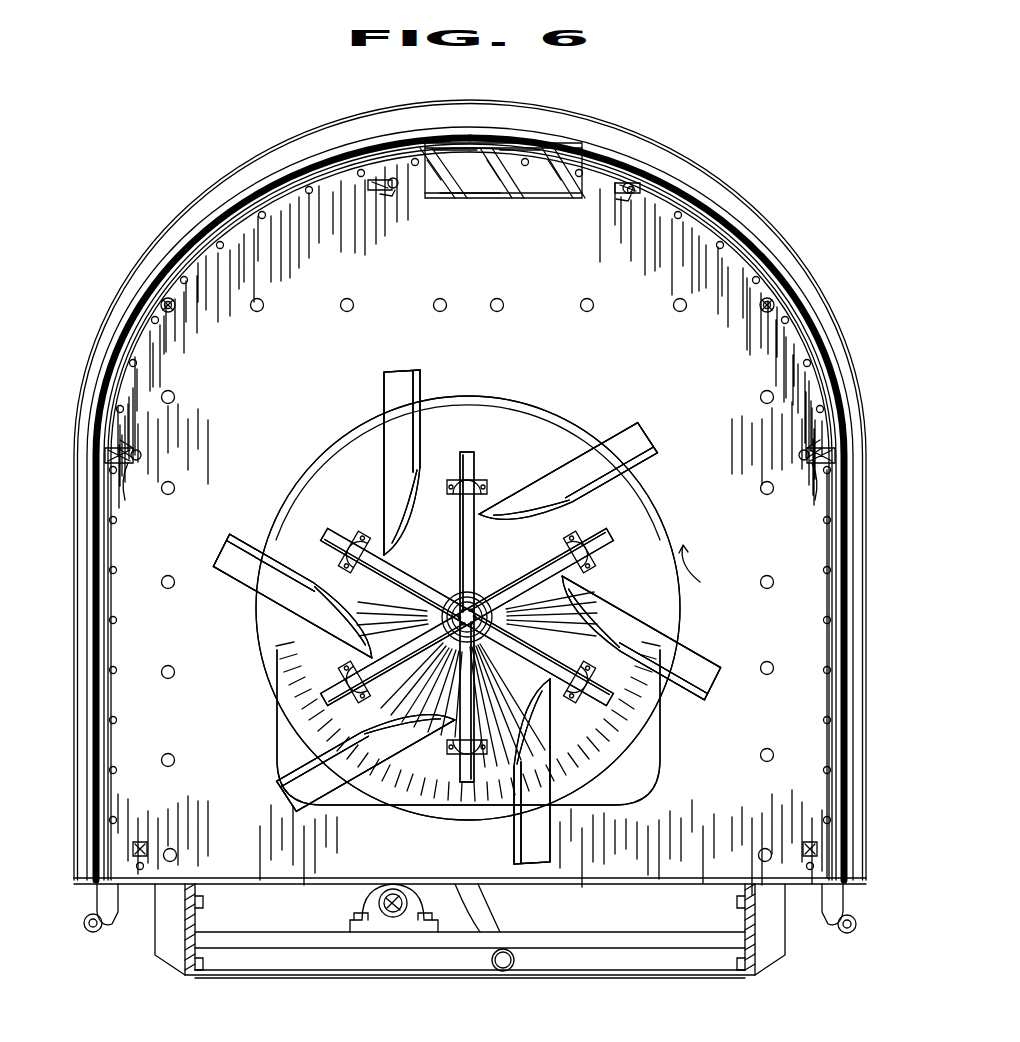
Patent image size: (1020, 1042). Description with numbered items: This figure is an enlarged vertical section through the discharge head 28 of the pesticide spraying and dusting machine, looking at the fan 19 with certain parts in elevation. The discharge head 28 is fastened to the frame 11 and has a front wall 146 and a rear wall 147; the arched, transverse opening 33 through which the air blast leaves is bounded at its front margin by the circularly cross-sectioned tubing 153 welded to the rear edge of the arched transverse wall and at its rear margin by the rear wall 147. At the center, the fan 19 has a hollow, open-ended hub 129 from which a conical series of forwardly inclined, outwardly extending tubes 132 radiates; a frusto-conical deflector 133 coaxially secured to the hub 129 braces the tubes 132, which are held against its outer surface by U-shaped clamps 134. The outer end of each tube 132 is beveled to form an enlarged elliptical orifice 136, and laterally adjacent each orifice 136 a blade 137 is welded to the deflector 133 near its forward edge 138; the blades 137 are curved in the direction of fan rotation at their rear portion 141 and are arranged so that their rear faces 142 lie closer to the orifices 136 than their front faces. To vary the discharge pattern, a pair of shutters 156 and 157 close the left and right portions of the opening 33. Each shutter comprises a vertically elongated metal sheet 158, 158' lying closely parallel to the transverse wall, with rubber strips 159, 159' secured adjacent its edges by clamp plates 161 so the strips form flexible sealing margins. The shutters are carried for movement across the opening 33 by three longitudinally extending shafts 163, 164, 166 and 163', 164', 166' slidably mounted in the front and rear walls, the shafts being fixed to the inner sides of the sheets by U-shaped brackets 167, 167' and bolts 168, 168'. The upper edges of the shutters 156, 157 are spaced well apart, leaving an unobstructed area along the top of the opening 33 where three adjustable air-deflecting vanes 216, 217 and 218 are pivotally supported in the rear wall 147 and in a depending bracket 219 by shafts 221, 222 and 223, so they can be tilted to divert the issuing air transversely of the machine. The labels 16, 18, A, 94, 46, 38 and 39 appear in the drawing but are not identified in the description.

The housing dome 16 is at (598, 131).
The arched transverse opening 33 is at (200, 203).
The discharge head 28 is at (735, 205).
The tubing 153 is at (758, 253).
The metal sheet 158 is at (470, 514).
The metal sheet 158' is at (649, 516).
The shutter 156 is at (124, 645).
The shutter 157 is at (829, 573).
The clamp plates 161 is at (140, 330).
The rubber strips 159 is at (305, 256).
The rubber strips 159' is at (776, 348).
The shaft 164 is at (146, 436).
The shaft 164' is at (791, 446).
The bolts 168 is at (250, 519).
The bolts 168' is at (684, 522).
The U-shaped brackets 167 is at (257, 518).
The U-shaped brackets 167' is at (672, 517).
The shaft 163 is at (369, 222).
The shaft 163' is at (629, 235).
The shaft 166 is at (159, 859).
The shaft 166' is at (789, 861).
The bracket 219 is at (545, 200).
The vane 216 is at (428, 148).
The vane 217 is at (489, 150).
The vane 218 is at (552, 152).
The shaft 221 is at (470, 153).
The shaft 222 is at (490, 192).
The shaft 223 is at (531, 180).
The front wall 146 is at (546, 356).
The fan 19 is at (280, 523).
The forward edge 138 is at (292, 498).
The frusto-conical deflector 133 is at (362, 504).
The tubes 132 is at (518, 546).
The U-shaped clamps 134 is at (358, 550).
The blade 137 is at (614, 432).
The rear portion 141 is at (385, 422).
The rear faces 142 is at (414, 458).
The elliptical orifice 136 is at (606, 549).
The hub 18 is at (442, 621).
The hub 129 is at (443, 610).
The rotation direction A is at (700, 582).
The rear wall 147 is at (725, 880).
The frame 11 is at (185, 962).
The bearing 94 is at (378, 904).
The pipe 46 is at (514, 953).
The left hook 38 is at (112, 928).
The right hook 39 is at (831, 930).